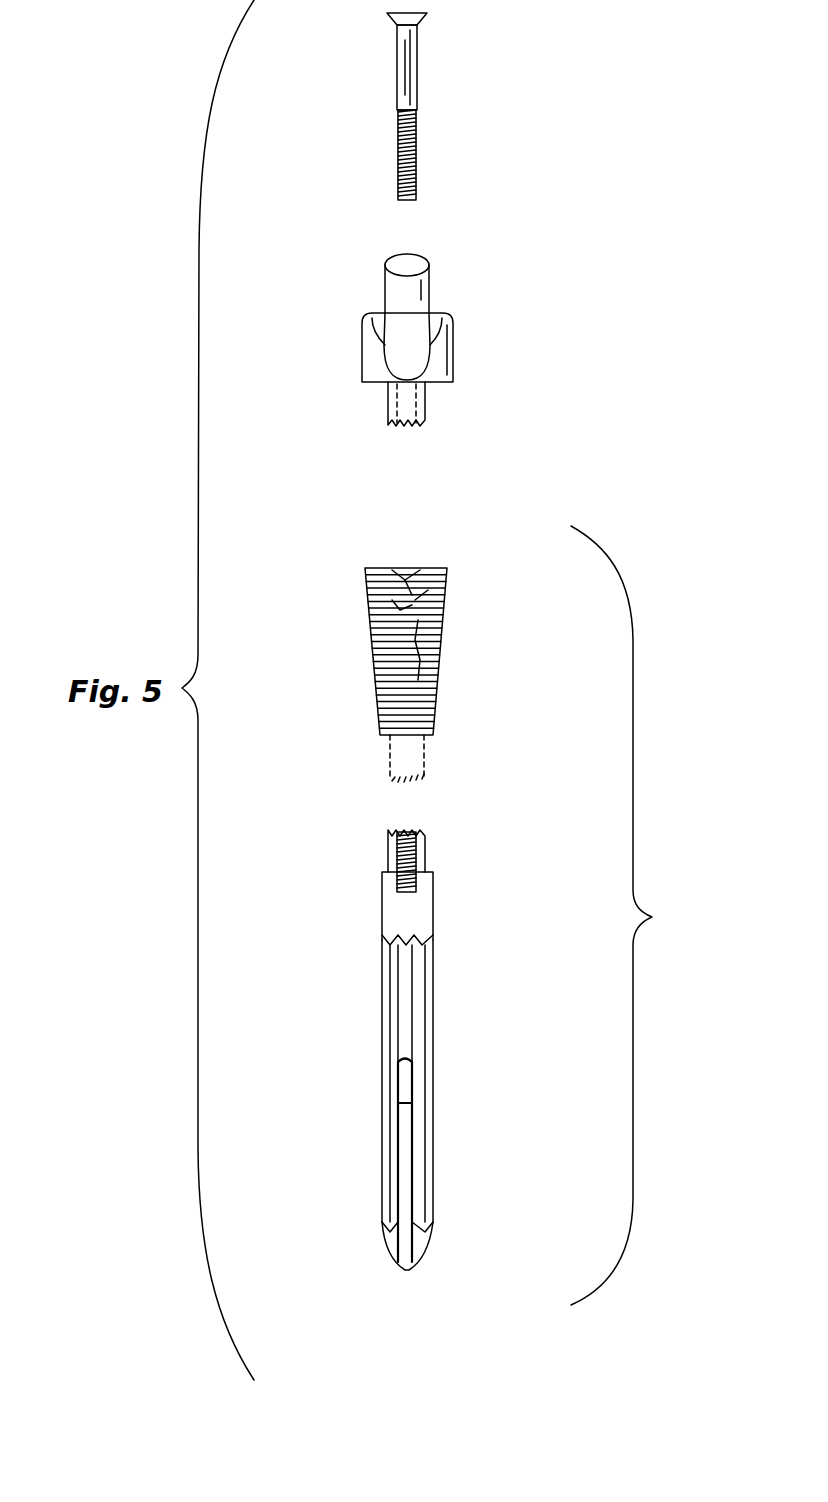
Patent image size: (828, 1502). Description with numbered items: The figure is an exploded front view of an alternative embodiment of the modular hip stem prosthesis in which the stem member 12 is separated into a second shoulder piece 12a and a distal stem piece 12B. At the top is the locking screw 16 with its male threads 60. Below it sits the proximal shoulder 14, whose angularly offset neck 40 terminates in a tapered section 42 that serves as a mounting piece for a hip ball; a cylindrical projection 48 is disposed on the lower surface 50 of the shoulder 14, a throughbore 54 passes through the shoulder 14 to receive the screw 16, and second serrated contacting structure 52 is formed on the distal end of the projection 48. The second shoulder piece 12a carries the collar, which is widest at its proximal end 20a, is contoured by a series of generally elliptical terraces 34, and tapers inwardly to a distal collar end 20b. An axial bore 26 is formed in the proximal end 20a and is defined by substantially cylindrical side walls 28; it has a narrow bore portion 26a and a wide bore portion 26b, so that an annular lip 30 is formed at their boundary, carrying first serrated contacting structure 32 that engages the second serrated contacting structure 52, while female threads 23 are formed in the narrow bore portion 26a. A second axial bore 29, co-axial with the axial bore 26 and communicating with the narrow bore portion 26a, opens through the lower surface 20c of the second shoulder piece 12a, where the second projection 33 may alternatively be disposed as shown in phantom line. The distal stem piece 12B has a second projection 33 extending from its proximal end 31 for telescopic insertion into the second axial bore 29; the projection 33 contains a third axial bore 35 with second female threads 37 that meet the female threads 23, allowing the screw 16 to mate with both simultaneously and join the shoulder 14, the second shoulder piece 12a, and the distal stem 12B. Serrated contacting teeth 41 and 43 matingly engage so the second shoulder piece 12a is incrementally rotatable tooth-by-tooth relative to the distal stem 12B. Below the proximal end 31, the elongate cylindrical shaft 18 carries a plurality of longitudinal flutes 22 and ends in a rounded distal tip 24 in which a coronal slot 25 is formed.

The stem member 12 is at (630, 915).
The second shoulder piece 12a is at (469, 611).
The distal stem piece 12B is at (463, 969).
The proximal shoulder 14 is at (453, 358).
The locking screw 16 is at (418, 85).
The cylindrical shaft 18 is at (382, 908).
The proximal end of the collar 20a is at (372, 565).
The distal collar end 20b is at (433, 735).
The lower surface of the second shoulder piece 20c is at (380, 738).
The longitudinal flutes 22 is at (420, 1095).
The female threads 23 is at (437, 640).
The distal tip 24 is at (428, 1247).
The coronal slot 25 is at (407, 1262).
The axial bore 26 is at (414, 565).
The narrow bore portion 26a is at (432, 678).
The wide bore portion 26b is at (420, 570).
The side walls 28 is at (396, 565).
The second axial bore 29 is at (405, 740).
The annular lip 30 is at (380, 600).
The proximal end of the distal stem 31 is at (428, 870).
The first serrated contacting structure 32 is at (365, 583).
The second projection 33 is at (425, 838).
The elliptical terraces 34 is at (375, 652).
The third axial bore 35 is at (390, 818).
The second female threads 37 is at (398, 855).
The angularly offset neck 40 is at (420, 313).
The serrated contacting teeth 41 is at (382, 712).
The tapered section 42 is at (429, 282).
The serrated contacting teeth 43 is at (417, 830).
The cylindrical projection 48 is at (425, 403).
The lower surface 50 is at (373, 382).
The second serrated contacting structure 52 is at (407, 428).
The throughbore 54 is at (400, 403).
The male threads 60 is at (416, 180).